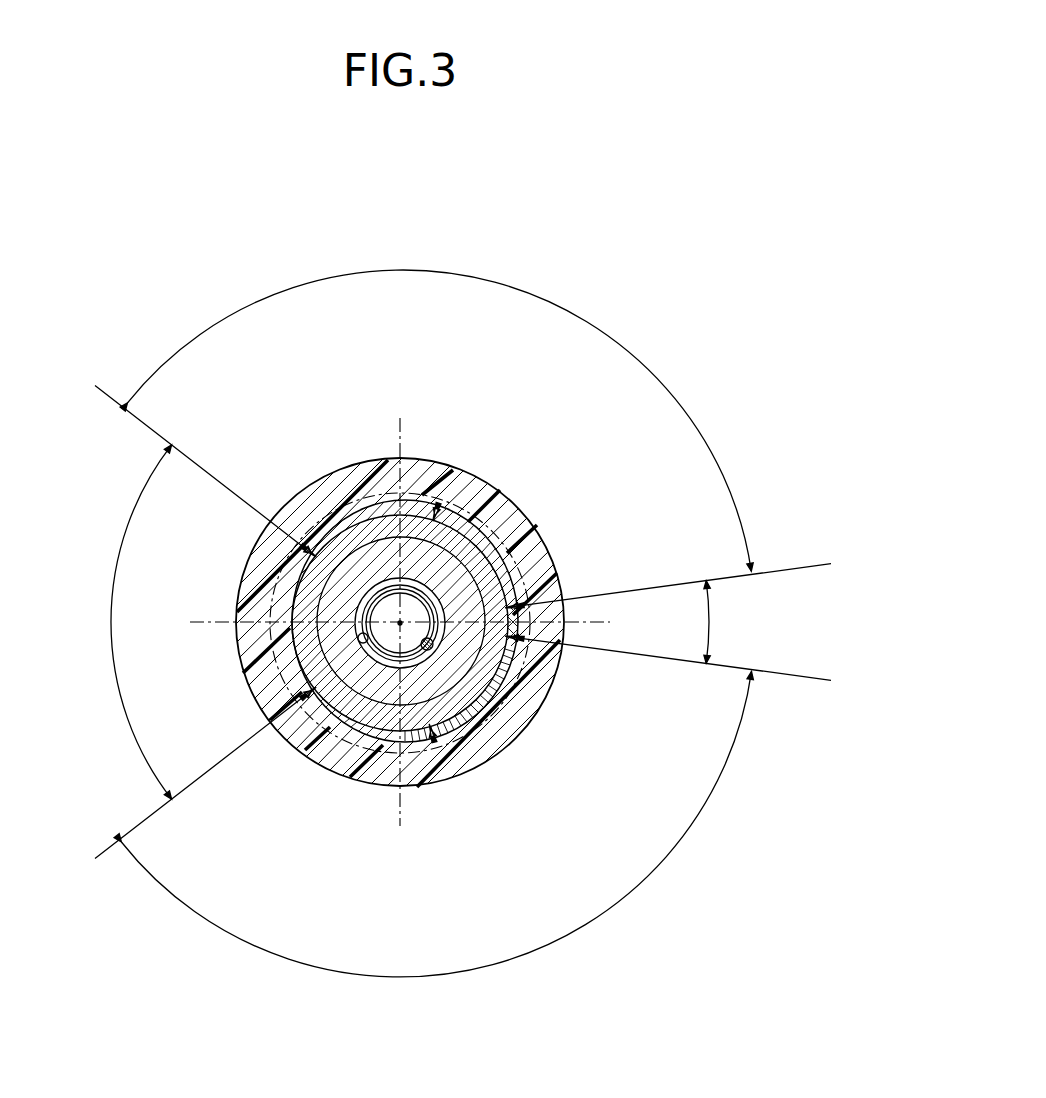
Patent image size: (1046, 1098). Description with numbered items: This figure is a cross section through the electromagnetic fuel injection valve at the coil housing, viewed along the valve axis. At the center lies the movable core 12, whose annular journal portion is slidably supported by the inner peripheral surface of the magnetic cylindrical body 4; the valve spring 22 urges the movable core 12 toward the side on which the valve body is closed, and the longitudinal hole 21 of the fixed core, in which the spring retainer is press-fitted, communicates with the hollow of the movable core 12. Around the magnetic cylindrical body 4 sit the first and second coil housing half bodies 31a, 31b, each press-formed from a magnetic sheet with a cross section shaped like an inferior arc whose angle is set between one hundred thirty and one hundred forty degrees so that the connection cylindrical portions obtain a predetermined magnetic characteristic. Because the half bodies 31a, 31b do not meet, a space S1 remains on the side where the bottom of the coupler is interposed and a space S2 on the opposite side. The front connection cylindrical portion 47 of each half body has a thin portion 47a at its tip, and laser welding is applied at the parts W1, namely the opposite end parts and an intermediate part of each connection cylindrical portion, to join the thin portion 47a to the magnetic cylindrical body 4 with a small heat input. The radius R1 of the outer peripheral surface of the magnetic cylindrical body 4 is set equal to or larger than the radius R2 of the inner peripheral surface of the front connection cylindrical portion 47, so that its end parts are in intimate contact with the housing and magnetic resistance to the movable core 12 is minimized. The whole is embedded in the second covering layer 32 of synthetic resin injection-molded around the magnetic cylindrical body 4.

The magnetic cylindrical body 4 is at (300, 590).
The movable core 12 is at (450, 634).
The longitudinal hole 21 is at (366, 643).
The valve spring 22 is at (391, 598).
The first coil housing half body 31a is at (382, 756).
The second coil housing half body 31b is at (385, 500).
The second covering layer 32 is at (250, 666).
The front connection cylindrical portion 47 is at (506, 496).
The thin portion 47a is at (524, 556).
The laser-welded part W1 is at (310, 540).
The radius of outer peripheral surface R1 is at (400, 623).
The radius of inner peripheral surface R2 is at (400, 623).
The space S1 is at (204, 621).
The space S2 is at (669, 622).